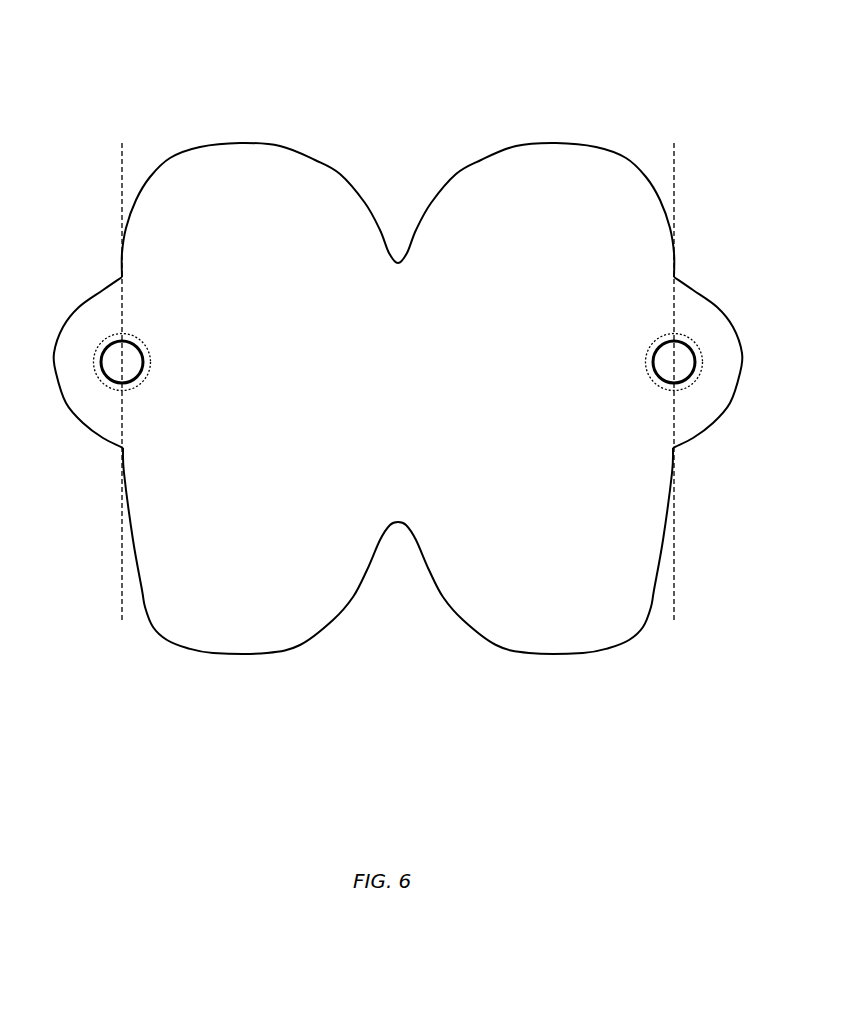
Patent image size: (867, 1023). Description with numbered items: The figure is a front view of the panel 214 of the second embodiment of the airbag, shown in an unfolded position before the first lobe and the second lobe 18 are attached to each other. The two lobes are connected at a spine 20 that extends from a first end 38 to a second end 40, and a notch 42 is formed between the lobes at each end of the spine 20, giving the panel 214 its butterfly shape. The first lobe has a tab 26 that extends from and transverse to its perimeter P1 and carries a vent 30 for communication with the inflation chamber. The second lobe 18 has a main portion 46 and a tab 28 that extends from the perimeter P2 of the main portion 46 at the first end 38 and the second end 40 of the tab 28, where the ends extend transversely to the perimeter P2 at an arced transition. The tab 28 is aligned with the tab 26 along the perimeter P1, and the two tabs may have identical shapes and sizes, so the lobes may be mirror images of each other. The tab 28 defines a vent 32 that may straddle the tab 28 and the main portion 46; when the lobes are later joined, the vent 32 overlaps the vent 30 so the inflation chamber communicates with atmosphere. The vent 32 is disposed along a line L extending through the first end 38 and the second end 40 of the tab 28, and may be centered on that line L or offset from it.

The panel 214 is at (398, 402).
The second lobe 18 is at (268, 177).
The spine 20 is at (397, 308).
The tab 26 is at (702, 397).
The tab 28 is at (93, 395).
The vent 30 is at (645, 360).
The vent 32 is at (147, 360).
The first end 38 is at (397, 262).
The second end 40 is at (123, 448).
The notch 42 is at (391, 205).
The main portion 46 is at (233, 573).
The perimeter P1 is at (571, 143).
The perimeter P2 is at (228, 142).
The line L is at (121, 165).